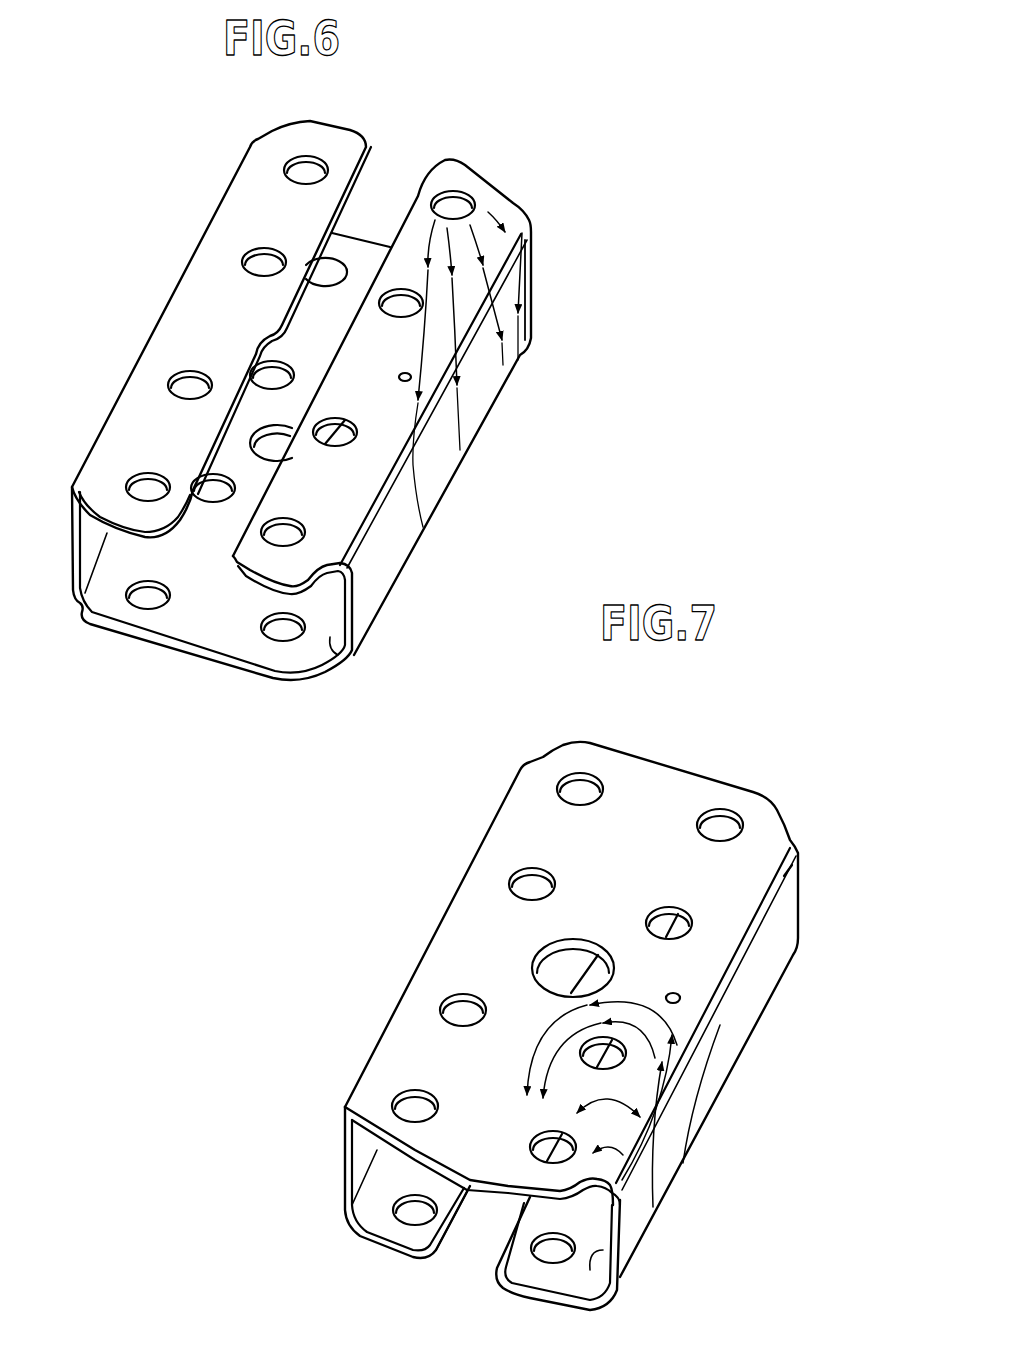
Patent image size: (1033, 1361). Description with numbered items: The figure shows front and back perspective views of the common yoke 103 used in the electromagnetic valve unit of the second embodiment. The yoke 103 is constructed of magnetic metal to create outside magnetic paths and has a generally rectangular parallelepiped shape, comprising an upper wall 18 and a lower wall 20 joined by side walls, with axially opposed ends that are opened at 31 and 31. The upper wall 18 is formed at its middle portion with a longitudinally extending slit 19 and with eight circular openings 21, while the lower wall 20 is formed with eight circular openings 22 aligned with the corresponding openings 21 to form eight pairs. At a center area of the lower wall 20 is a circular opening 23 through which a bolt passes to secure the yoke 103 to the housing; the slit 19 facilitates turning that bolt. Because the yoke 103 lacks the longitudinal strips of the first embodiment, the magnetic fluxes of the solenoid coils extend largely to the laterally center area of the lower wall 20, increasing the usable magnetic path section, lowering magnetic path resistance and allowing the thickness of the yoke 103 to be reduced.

In FIG. 6, the common yoke 103 is at (381, 140).
In FIG. 7, the common yoke 103 is at (643, 740).
In FIG. 6, the upper wall 18 is at (112, 450).
In FIG. 7, the upper wall 18 is at (375, 1220).
In FIG. 6, the slit 19 is at (191, 497).
In FIG. 7, the slit 19 is at (445, 1232).
In FIG. 6, the lower wall 20 is at (240, 647).
In FIG. 7, the lower wall 20 is at (370, 1063).
In FIG. 6, the circular openings 21 is at (293, 168).
In FIG. 7, the circular openings 21 is at (400, 1224).
In FIG. 6, the circular openings 22 is at (142, 602).
In FIG. 7, the circular openings 22 is at (557, 788).
In FIG. 6, the circular opening 23 is at (270, 430).
In FIG. 7, the circular opening 23 is at (612, 982).
In FIG. 6, the opened ends 31 is at (515, 217).
In FIG. 7, the opened ends 31 is at (793, 848).